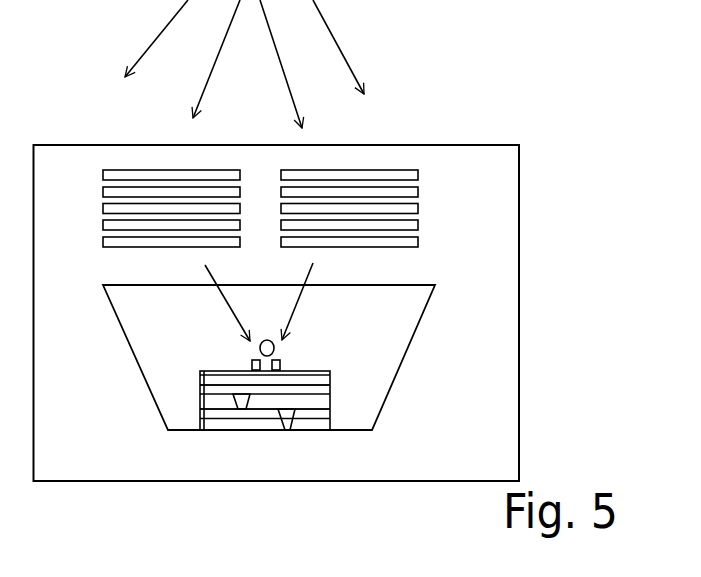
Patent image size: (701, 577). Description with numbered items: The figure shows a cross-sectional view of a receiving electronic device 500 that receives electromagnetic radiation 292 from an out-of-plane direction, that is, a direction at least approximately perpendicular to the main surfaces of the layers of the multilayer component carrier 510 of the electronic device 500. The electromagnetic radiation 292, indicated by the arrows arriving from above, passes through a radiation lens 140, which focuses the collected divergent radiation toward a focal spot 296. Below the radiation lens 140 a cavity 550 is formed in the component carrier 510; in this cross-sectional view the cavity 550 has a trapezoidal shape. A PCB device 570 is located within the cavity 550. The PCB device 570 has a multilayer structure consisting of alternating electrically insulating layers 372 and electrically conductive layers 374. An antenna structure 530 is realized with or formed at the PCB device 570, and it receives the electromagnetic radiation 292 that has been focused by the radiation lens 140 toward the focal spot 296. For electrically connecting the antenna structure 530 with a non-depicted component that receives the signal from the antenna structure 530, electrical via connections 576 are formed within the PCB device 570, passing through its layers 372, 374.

The receiving electronic device 500 is at (546, 109).
The multilayer component carrier 510 is at (519, 202).
The electromagnetic radiation 292 is at (342, 43).
The radiation lens 140 is at (101, 165).
The cavity 550 is at (383, 332).
The focal spot 296 is at (265, 340).
The antenna structure 530 is at (283, 361).
The electrically insulating layers 372 is at (330, 370).
The electrically conductive layers 374 is at (330, 384).
The PCB device 570 is at (200, 398).
The electrical via connections 576 is at (235, 400).